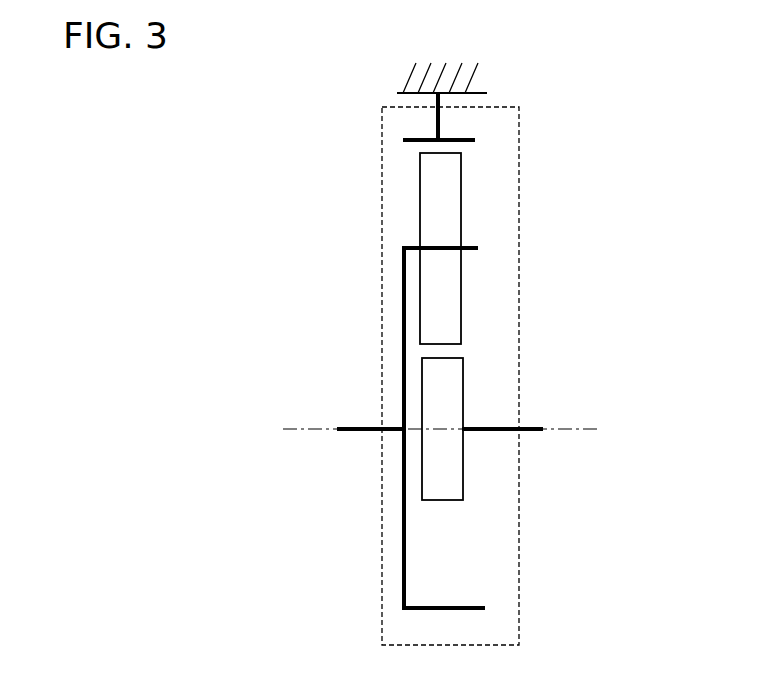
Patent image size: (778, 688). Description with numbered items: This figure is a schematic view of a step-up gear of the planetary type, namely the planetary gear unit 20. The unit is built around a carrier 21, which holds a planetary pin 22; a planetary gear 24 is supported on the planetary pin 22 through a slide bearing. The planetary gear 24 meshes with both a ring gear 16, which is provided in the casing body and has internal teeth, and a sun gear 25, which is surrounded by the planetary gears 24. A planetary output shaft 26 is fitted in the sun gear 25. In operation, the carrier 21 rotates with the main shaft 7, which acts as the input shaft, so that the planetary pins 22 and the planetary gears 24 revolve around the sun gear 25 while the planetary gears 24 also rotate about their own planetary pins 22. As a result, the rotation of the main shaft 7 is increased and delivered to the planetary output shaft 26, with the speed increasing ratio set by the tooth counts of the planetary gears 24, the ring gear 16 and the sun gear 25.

The main shaft 7 is at (358, 432).
The ring gear 16 is at (470, 137).
The planetary gear unit 20 is at (518, 177).
The carrier 21 is at (403, 325).
The planetary pin 22 is at (473, 250).
The planetary gear 24 is at (462, 215).
The sun gear 25 is at (463, 487).
The planetary output shaft 26 is at (507, 430).